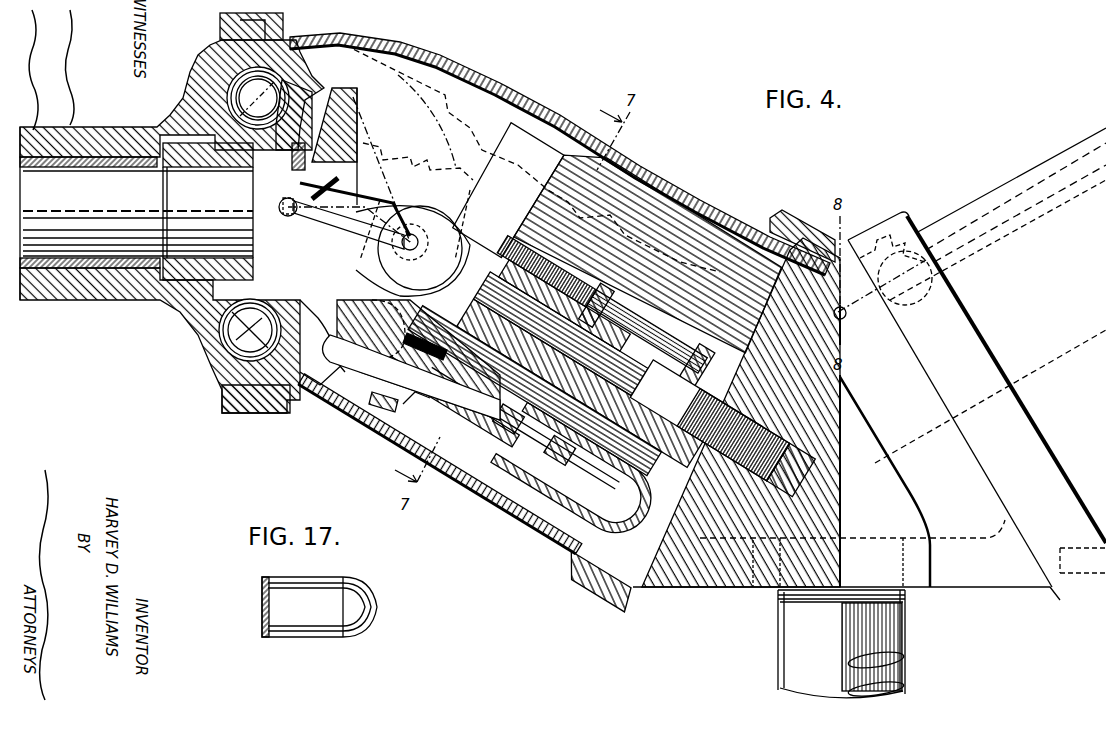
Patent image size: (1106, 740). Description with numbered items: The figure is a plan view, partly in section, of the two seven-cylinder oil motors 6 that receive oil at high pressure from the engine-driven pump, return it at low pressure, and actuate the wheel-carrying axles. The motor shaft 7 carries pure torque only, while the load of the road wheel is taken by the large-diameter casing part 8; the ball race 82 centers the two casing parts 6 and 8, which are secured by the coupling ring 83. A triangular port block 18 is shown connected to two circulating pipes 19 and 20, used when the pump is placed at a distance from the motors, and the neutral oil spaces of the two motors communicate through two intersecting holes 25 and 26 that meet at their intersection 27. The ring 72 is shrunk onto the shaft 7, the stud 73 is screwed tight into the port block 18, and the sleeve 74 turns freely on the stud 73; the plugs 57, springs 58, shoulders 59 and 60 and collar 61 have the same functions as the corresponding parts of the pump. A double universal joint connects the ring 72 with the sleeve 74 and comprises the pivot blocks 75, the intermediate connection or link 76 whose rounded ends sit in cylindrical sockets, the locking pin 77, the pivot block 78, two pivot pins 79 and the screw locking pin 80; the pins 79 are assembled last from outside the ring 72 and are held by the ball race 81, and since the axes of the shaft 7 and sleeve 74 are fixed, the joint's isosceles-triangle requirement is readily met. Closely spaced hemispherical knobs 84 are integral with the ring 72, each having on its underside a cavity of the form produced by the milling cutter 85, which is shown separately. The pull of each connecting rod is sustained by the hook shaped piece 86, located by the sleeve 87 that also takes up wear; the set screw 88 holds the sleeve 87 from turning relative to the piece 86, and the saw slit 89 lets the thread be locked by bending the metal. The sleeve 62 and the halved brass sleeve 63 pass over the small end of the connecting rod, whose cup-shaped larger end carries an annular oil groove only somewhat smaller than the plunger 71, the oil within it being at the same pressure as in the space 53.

In FIG. 4, the motor 6 is at (489, 497).
In FIG. 4, the motor shaft 7 is at (136, 211).
In FIG. 4, the casing 8 is at (144, 308).
In FIG. 4, the triangular port block 18 is at (846, 419).
In FIG. 4, the circulating pipe 19 is at (897, 637).
In FIG. 4, the circulating pipe 20 is at (842, 674).
In FIG. 4, the intersecting hole 25 is at (789, 238).
In FIG. 4, the intersecting hole 26 is at (940, 282).
In FIG. 4, the intersection 27 is at (850, 323).
In FIG. 4, the oil pressure space 53 is at (463, 417).
In FIG. 4, the plug 57 is at (582, 272).
In FIG. 4, the spring 58 is at (565, 305).
In FIG. 4, the shoulder 59 is at (500, 238).
In FIG. 4, the shoulder 60 is at (606, 298).
In FIG. 4, the collar 61 is at (667, 347).
In FIG. 4, the sleeve 62 is at (490, 437).
In FIG. 4, the brass sleeve 63 is at (535, 453).
In FIG. 4, the plunger 71 is at (583, 483).
In FIG. 4, the ring 72 is at (352, 117).
In FIG. 4, the stud 73 is at (611, 384).
In FIG. 4, the sleeve 74 is at (604, 324).
In FIG. 4, the pivot block 75 is at (400, 197).
In FIG. 4, the intermediate connection 76 is at (367, 162).
In FIG. 4, the locking pin 77 is at (440, 215).
In FIG. 4, the pivot block 78 is at (328, 194).
In FIG. 4, the pivot pin 79 is at (294, 164).
In FIG. 4, the screw locking pin 80 is at (283, 206).
In FIG. 4, the ball race 81 is at (290, 100).
In FIG. 4, the ball race 82 is at (212, 74).
In FIG. 4, the coupling ring 83 is at (258, 8).
In FIG. 4, the hemispherical knob 84 is at (420, 258).
In FIG. 17, the milling cutter 85 is at (319, 607).
In FIG. 4, the hook shaped piece 86 is at (355, 366).
In FIG. 4, the sleeve 87 is at (440, 300).
In FIG. 4, the set screw 88 is at (382, 396).
In FIG. 4, the saw slit 89 is at (403, 404).